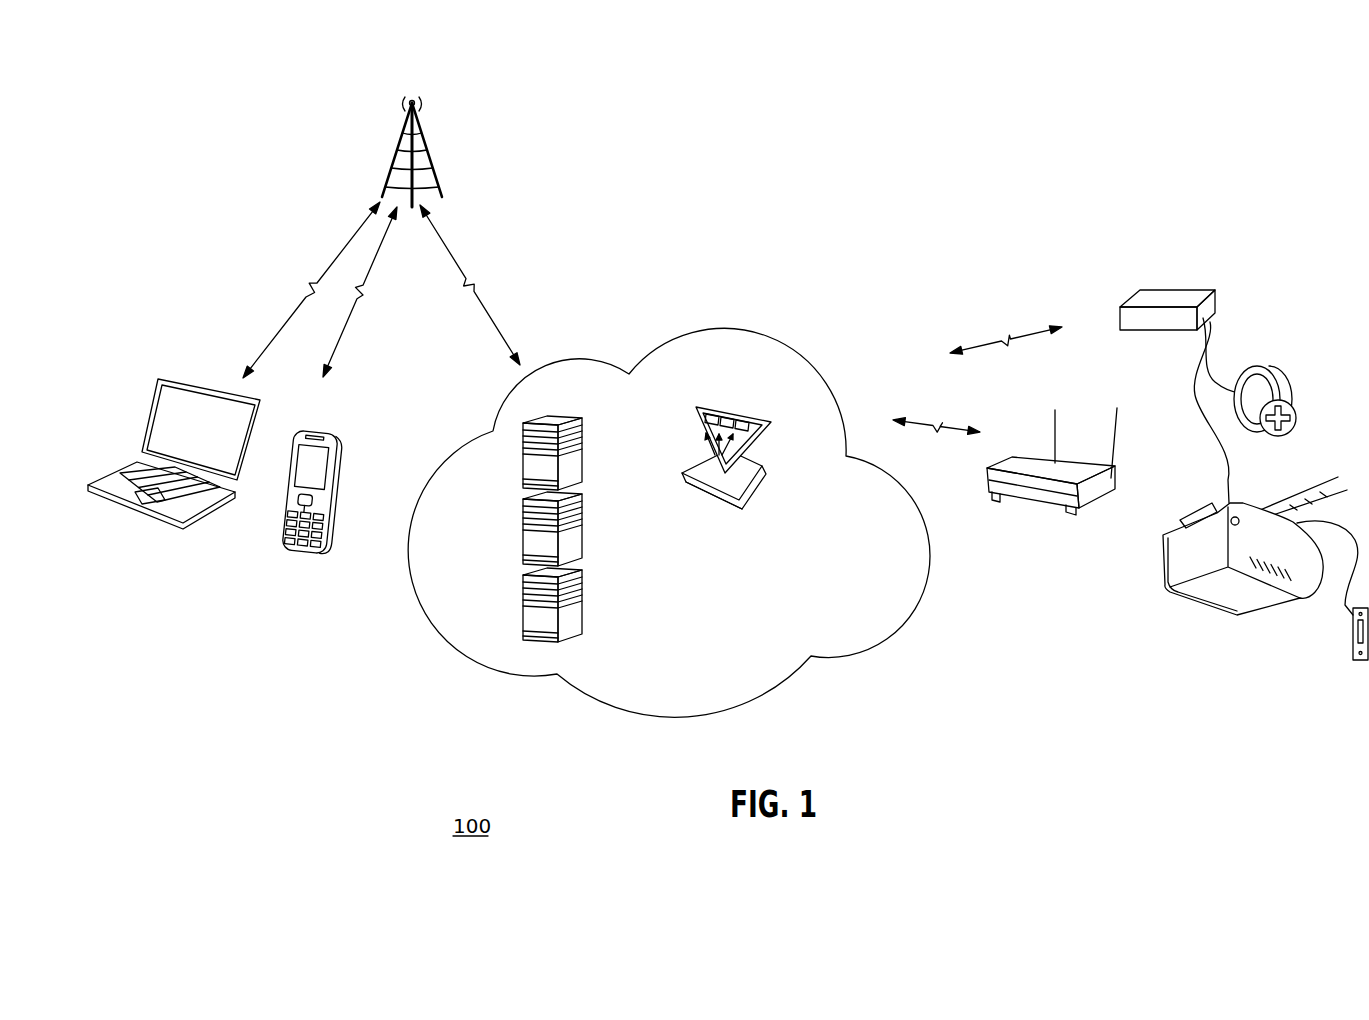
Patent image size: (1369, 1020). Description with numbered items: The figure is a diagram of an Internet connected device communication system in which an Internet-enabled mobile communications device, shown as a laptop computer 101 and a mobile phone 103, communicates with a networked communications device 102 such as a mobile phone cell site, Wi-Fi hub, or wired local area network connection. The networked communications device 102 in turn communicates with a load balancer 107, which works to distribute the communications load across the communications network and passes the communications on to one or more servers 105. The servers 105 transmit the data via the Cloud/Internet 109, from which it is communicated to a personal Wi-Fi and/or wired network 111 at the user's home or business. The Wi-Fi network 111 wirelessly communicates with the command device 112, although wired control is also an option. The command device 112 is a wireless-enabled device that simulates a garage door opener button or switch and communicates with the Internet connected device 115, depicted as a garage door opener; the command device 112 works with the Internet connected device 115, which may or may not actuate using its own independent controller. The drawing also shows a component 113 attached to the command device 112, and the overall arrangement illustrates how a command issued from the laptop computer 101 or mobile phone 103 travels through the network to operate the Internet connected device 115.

The laptop computer 101 is at (162, 518).
The networked communications device 102 is at (433, 147).
The mobile phone 103 is at (325, 557).
The servers 105 is at (534, 625).
The load balancer 107 is at (716, 486).
The Cloud/Internet 109 is at (632, 684).
The personal Wi-Fi and/or wired network 111 is at (1038, 488).
The command device 112 is at (1183, 290).
The sensor 113 is at (1268, 367).
The Internet connected device 115 is at (1225, 593).